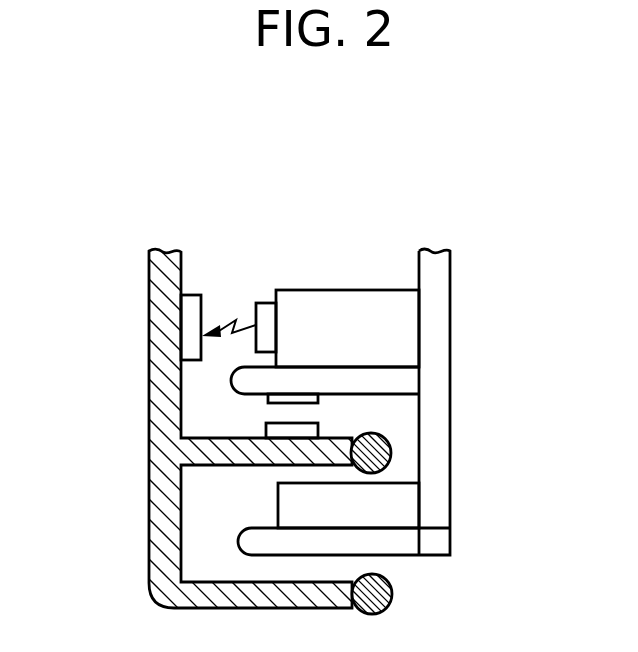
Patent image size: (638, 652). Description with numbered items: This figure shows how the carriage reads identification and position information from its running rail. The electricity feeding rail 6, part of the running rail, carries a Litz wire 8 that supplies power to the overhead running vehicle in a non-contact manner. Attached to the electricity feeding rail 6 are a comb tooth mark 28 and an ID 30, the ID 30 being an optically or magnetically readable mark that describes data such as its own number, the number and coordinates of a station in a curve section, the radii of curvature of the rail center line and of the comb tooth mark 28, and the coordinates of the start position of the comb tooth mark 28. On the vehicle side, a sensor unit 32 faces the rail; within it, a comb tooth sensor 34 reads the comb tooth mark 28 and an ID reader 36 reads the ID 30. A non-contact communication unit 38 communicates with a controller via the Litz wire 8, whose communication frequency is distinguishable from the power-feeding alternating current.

The electricity feeding rail 6 is at (148, 473).
The Litz wire 8 is at (383, 427).
The comb tooth mark 28 is at (300, 423).
The ID 30 is at (183, 312).
The sensor unit 32 is at (433, 326).
The comb tooth sensor 34 is at (290, 384).
The ID reader 36 is at (290, 297).
The non-contact communication unit 38 is at (391, 500).